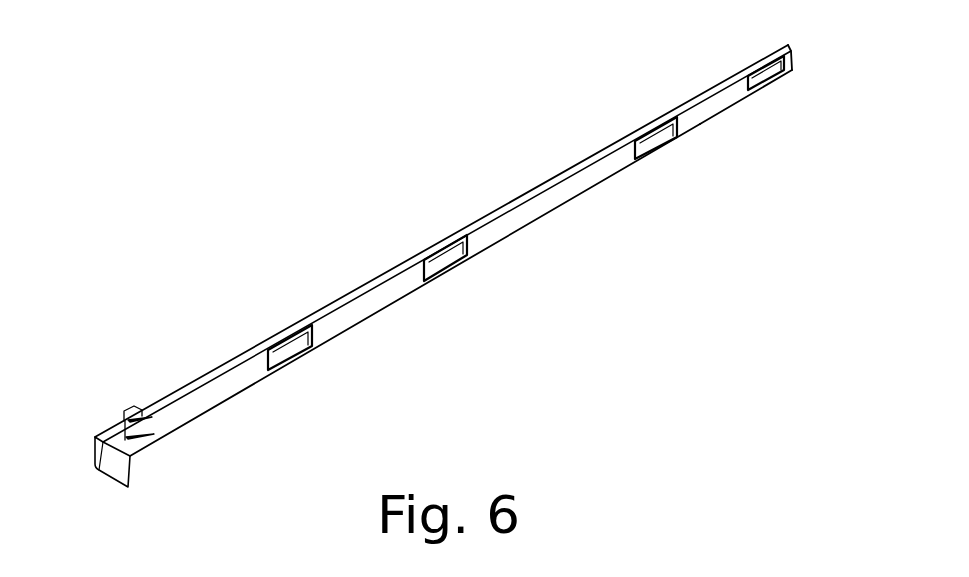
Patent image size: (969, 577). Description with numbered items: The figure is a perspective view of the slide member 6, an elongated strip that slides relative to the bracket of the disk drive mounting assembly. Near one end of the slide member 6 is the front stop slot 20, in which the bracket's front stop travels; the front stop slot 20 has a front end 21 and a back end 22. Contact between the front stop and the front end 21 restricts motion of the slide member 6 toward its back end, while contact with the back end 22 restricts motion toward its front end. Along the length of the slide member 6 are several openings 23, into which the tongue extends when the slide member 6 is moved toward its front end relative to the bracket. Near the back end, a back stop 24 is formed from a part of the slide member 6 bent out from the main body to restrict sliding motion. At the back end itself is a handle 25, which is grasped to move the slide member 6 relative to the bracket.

The slide member 6 is at (505, 207).
The front stop slot 20 is at (767, 76).
The front end 21 is at (783, 61).
The back end 22 is at (763, 69).
The opening 23 is at (288, 347).
The back stop 24 is at (128, 410).
The handle 25 is at (113, 467).